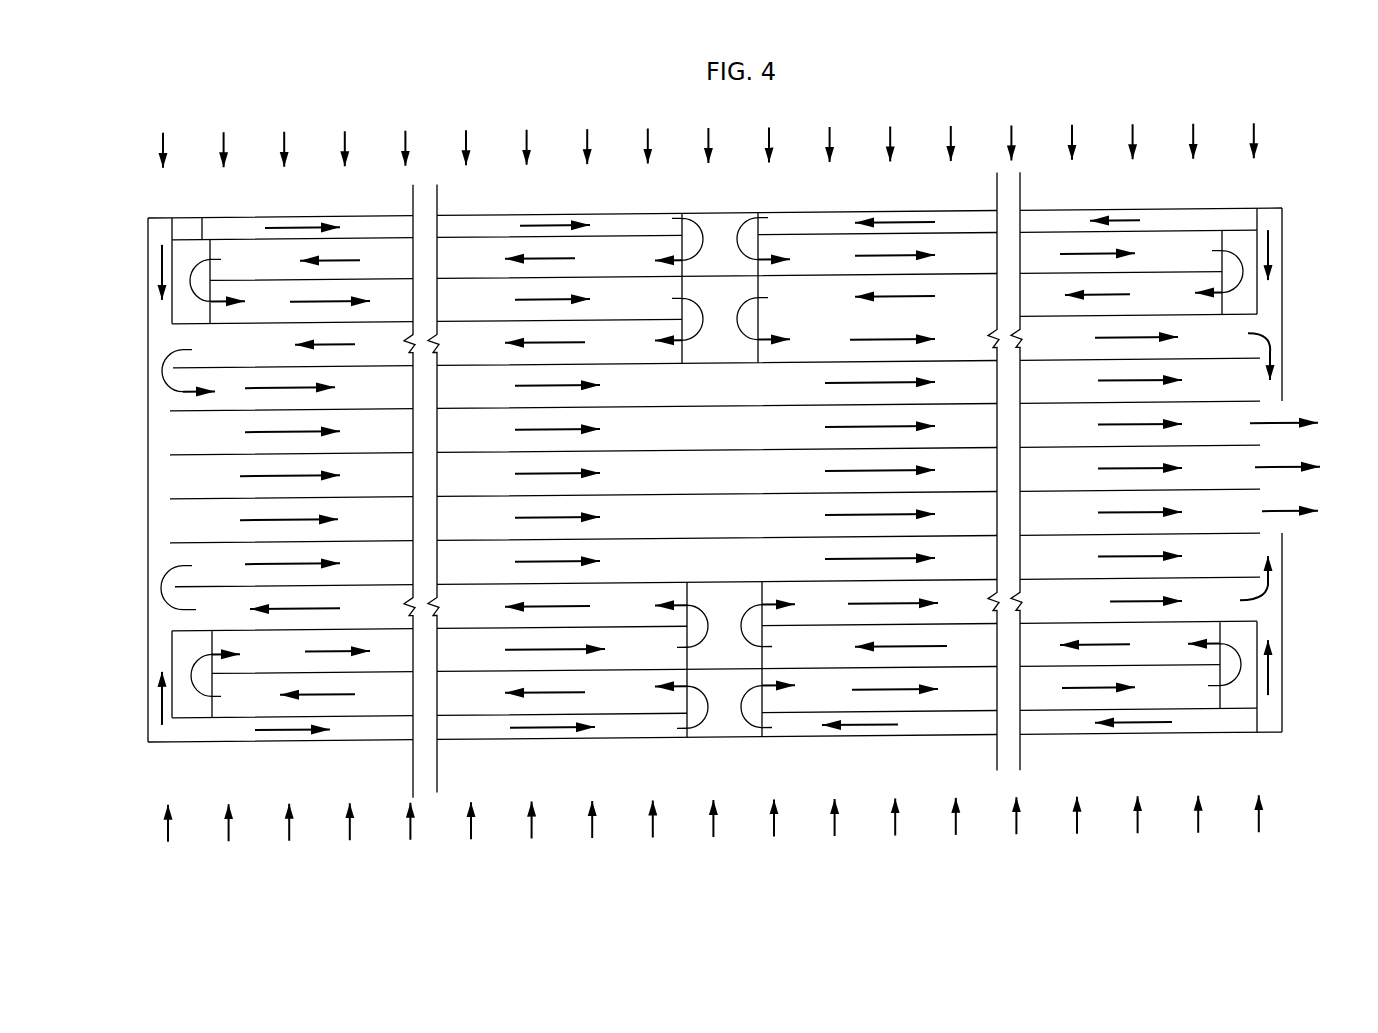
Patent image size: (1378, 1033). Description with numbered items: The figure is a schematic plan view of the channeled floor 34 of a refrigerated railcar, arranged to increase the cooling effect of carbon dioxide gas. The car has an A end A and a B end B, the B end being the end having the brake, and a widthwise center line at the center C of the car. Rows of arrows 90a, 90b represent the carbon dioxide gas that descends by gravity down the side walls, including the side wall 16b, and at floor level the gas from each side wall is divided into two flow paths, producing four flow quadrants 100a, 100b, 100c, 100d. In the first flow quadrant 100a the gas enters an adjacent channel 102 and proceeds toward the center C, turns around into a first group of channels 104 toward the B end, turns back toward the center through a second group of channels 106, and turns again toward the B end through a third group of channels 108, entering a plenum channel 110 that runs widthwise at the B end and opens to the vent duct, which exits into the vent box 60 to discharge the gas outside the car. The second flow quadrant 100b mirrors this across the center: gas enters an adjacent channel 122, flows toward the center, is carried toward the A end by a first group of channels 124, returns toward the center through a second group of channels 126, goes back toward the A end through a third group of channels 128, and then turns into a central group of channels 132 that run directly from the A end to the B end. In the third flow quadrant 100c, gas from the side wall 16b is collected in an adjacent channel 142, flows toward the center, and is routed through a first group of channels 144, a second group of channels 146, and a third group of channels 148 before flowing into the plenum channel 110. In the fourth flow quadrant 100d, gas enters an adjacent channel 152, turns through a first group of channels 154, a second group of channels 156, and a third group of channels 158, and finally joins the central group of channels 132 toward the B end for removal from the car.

The A end A is at (144, 243).
The B end B is at (1289, 237).
The center of the car C is at (728, 208).
The side wall 16b is at (1247, 737).
The channeled floor 34 is at (1264, 718).
The vent box 60 is at (1278, 407).
The rows of arrows 90a is at (898, 128).
The rows of arrows 90b is at (1215, 822).
The flow quadrant 100a is at (915, 207).
The flow quadrant 100b is at (490, 208).
The flow quadrant 100c is at (971, 744).
The flow quadrant 100d is at (556, 748).
The adjacent channel 102 is at (1072, 216).
The first group of channels 104 is at (1138, 240).
The second group of channels 106 is at (1163, 290).
The third group of channels 108 is at (1205, 337).
The plenum channel 110 is at (1267, 317).
The adjacent channel 122 is at (213, 228).
The first group of channels 124 is at (258, 258).
The second group of channels 126 is at (385, 300).
The third group of channels 128 is at (623, 345).
The central group of channels 132 is at (135, 633).
The adjacent channel 142 is at (868, 730).
The first group of channels 144 is at (1042, 697).
The second group of channels 146 is at (1147, 645).
The third group of channels 148 is at (1185, 597).
The adjacent channel 152 is at (345, 732).
The first group of channels 154 is at (595, 697).
The second group of channels 156 is at (628, 657).
The third group of channels 158 is at (483, 605).